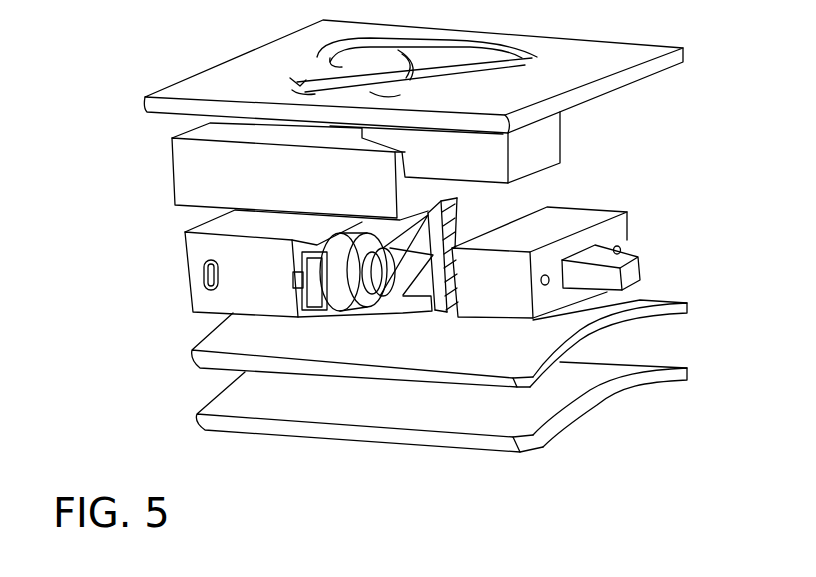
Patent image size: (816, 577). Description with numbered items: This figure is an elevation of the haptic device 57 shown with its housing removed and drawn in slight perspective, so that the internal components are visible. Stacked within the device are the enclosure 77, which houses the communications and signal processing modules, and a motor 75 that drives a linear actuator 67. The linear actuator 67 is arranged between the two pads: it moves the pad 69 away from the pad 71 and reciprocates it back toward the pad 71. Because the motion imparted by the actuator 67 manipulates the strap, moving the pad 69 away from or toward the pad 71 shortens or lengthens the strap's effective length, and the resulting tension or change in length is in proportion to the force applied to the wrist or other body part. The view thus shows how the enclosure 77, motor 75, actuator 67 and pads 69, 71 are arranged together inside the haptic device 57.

The haptic device 57 is at (117, 60).
The enclosure 77 is at (547, 143).
The linear actuator 67 is at (450, 212).
The motor 75 is at (185, 272).
The pad 71 is at (688, 310).
The pad 69 is at (693, 376).